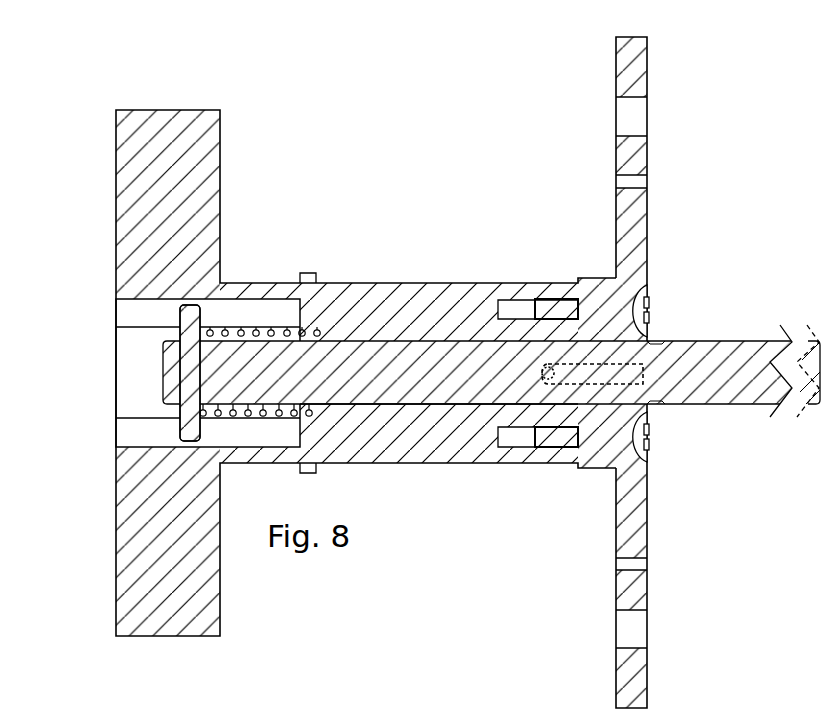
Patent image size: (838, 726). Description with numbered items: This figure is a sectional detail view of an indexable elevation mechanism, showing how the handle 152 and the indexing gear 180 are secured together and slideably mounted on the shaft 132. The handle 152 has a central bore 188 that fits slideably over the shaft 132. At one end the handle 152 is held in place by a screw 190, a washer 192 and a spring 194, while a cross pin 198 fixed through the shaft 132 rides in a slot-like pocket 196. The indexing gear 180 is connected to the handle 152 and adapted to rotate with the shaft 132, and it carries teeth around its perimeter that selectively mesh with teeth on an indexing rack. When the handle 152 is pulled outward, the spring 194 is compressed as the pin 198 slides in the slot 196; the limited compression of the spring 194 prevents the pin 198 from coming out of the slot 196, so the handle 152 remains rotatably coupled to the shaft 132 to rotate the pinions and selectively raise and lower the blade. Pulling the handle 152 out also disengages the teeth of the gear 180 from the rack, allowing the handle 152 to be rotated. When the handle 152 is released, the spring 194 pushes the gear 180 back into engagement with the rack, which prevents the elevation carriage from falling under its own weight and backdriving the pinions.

The handle 152 is at (180, 232).
The indexing gear 180 is at (630, 155).
The shaft 132 is at (716, 340).
The screw 190 is at (163, 352).
The washer 192 is at (188, 377).
The spring 194 is at (240, 333).
The central bore 188 is at (443, 406).
The slot-like pocket 196 is at (653, 397).
The cross pin 198 is at (556, 371).